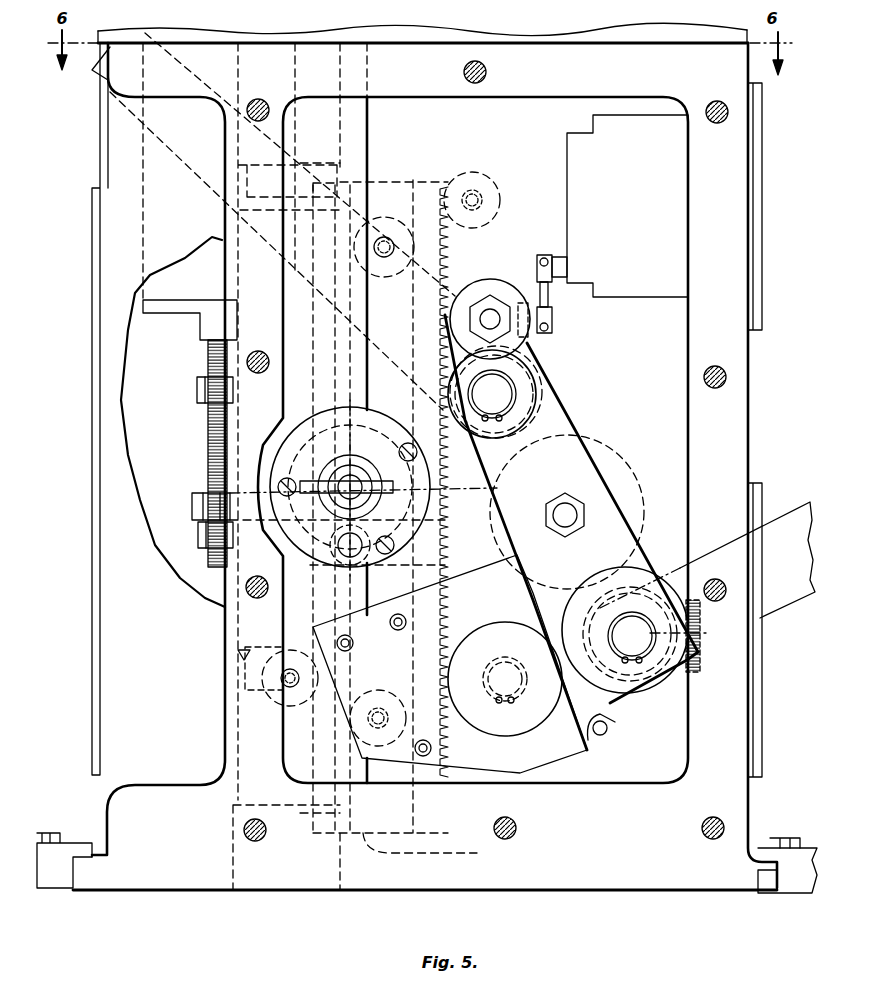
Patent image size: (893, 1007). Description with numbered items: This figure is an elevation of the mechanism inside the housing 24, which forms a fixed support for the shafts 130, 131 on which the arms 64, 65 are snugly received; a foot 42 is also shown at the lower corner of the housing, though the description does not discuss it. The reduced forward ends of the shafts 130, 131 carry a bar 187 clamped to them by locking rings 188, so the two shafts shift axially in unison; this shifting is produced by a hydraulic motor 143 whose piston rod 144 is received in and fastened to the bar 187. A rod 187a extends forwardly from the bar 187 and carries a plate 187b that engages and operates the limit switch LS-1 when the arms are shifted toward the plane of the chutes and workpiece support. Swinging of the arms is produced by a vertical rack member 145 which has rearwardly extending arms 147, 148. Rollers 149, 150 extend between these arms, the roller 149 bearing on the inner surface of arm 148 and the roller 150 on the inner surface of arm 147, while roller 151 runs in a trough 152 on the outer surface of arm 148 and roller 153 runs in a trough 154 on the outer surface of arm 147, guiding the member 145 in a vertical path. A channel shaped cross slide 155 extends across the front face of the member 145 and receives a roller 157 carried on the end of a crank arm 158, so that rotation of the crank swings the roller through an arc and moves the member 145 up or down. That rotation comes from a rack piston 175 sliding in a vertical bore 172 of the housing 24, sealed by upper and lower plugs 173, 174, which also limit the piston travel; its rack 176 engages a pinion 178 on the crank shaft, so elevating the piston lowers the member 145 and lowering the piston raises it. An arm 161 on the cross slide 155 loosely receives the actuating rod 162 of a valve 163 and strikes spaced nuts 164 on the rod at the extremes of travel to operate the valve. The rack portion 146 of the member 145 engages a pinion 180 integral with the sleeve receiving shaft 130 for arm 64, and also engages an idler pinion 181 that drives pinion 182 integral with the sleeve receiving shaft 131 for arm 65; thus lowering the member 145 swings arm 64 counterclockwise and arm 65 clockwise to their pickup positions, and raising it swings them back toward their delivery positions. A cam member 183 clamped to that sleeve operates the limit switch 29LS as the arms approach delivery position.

The housing 24 is at (749, 366).
The mounting foot 42 is at (768, 850).
The arm 64 is at (198, 168).
The arm 65 is at (790, 607).
The shaft 130 is at (507, 397).
The shaft 131 is at (684, 665).
The hydraulic motor 143 is at (626, 458).
The piston rod 144 is at (570, 523).
The vertical rack member 145 is at (377, 180).
The rack portion 146 is at (488, 490).
The arm 147 is at (329, 831).
The arm 148 is at (423, 210).
The roller 149 is at (376, 225).
The roller 150 is at (378, 697).
The roller 151 is at (478, 175).
The trough 152 is at (445, 250).
The roller 153 is at (272, 706).
The trough 154 is at (300, 768).
The cross slide 155 is at (442, 560).
The roller 157 is at (368, 568).
The arm 158 is at (448, 520).
The arm 161 is at (193, 509).
The actuating rod 162 is at (207, 438).
The valve 163 is at (178, 316).
The nuts 164 is at (197, 393).
The vertical bore 172 is at (238, 793).
The plug 173 is at (340, 80).
The plug 174 is at (233, 849).
The rack piston 175 is at (238, 662).
The rack 176 is at (348, 391).
The pinion 178 is at (353, 448).
The pinion 180 is at (520, 390).
The idler pinion 181 is at (500, 716).
The pinion 182 is at (653, 713).
The cam member 183 is at (634, 715).
The bar 187 is at (578, 426).
The rod 187a is at (487, 310).
The plate 187b is at (508, 277).
The locking rings 188 is at (516, 377).
The limit switch 29LS is at (450, 664).
The limit switch LS-1 is at (627, 206).